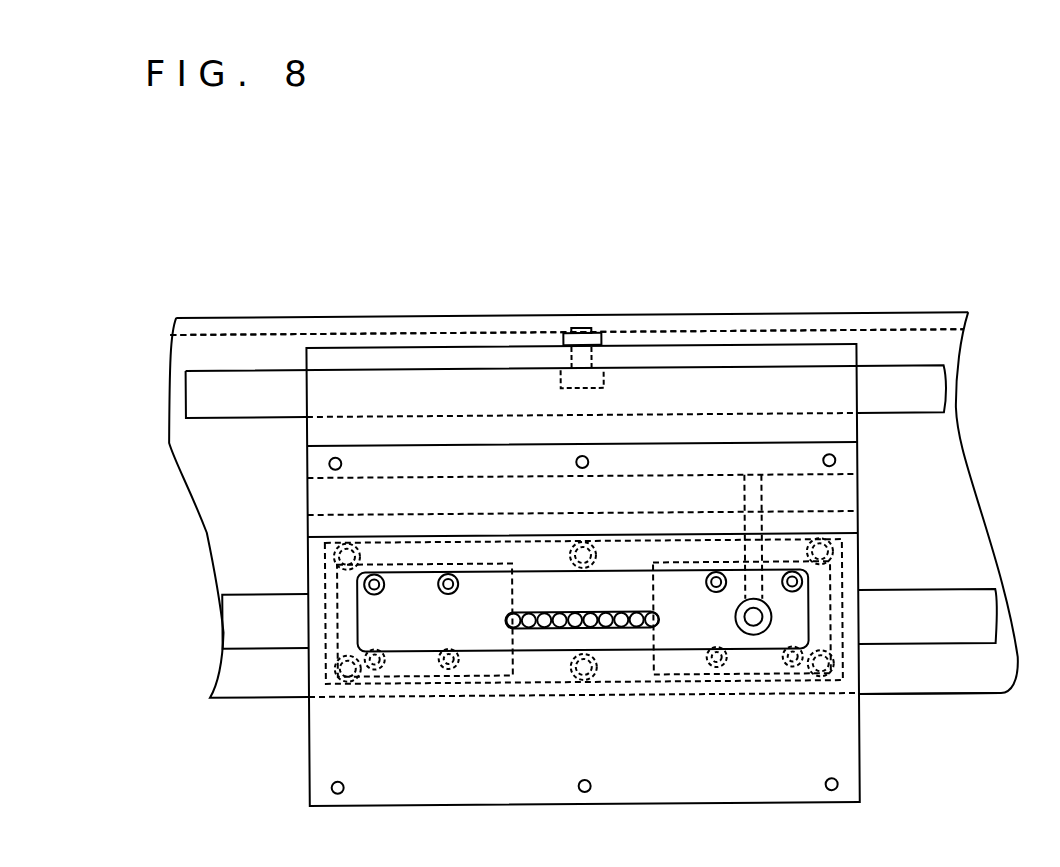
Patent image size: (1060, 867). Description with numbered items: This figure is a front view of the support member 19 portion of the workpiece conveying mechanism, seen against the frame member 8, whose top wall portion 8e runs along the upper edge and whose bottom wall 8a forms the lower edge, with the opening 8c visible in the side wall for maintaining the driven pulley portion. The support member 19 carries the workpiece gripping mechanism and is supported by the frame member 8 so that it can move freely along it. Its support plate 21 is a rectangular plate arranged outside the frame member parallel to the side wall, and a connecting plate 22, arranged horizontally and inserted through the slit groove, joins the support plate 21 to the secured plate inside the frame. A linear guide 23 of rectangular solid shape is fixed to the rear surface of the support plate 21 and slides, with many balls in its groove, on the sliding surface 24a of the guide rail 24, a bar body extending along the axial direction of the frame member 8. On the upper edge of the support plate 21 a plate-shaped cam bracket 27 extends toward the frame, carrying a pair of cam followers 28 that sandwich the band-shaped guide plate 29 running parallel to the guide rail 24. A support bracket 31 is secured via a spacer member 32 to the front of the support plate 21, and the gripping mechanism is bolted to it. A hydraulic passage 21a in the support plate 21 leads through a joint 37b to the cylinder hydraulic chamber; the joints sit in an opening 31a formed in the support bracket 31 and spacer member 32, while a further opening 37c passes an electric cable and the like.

The frame member 8 is at (785, 308).
The bottom wall 8a is at (912, 697).
The opening 8c is at (958, 488).
The top wall portion 8e is at (735, 315).
The support member 19 is at (863, 342).
The support plate 21 is at (845, 428).
The hydraulic passage 21a is at (760, 497).
The connecting plate 22 is at (705, 475).
The linear guide 23 is at (415, 563).
The guide rail 24 is at (966, 592).
The sliding surface 24a is at (907, 600).
The cam bracket 27 is at (820, 348).
The cam followers 28 is at (612, 375).
The guide plate 29 is at (935, 368).
The support bracket 31 is at (655, 446).
The opening 31a is at (618, 646).
The spacer member 32 is at (627, 540).
The joint 37b is at (753, 637).
The opening 37c is at (552, 624).